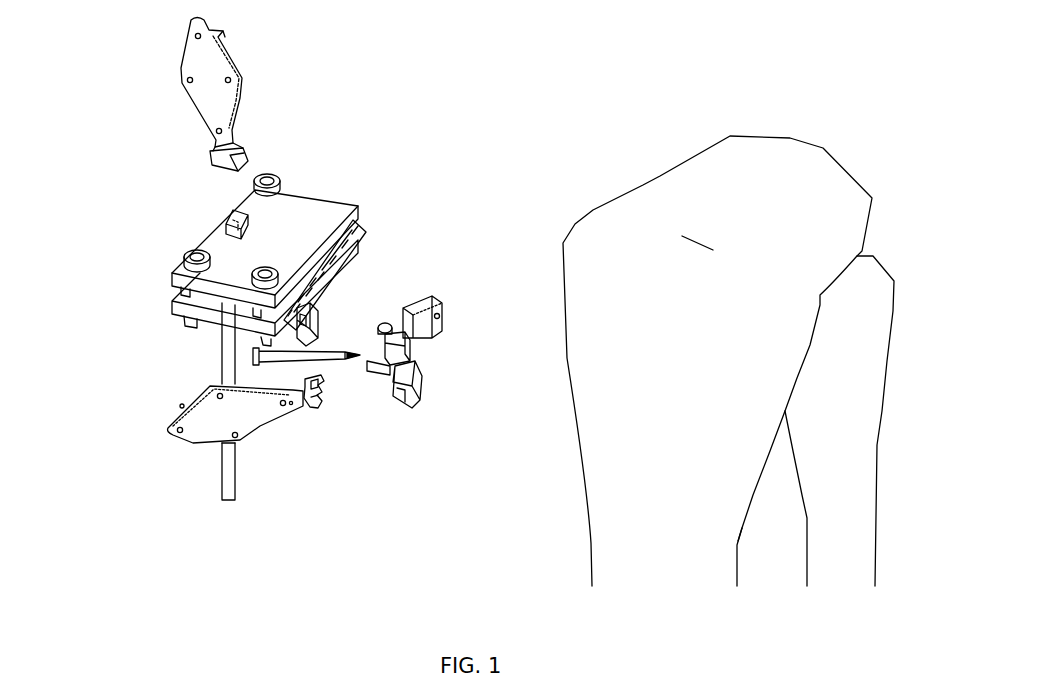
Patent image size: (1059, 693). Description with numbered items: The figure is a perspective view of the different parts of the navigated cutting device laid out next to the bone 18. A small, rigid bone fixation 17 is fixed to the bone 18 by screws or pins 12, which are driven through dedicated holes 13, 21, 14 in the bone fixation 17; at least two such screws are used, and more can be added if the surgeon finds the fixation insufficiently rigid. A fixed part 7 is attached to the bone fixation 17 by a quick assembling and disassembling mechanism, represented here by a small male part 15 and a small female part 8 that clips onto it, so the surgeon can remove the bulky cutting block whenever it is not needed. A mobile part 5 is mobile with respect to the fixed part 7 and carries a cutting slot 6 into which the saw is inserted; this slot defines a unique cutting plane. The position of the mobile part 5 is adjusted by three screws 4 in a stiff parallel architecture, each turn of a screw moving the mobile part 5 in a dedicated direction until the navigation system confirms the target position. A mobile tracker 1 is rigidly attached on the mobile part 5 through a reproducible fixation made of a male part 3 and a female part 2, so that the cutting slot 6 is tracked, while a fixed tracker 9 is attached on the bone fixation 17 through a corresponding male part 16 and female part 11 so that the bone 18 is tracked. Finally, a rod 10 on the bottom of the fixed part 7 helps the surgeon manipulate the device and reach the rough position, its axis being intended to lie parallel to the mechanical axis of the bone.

The mobile tracker 1 is at (180, 70).
The female part 2 is at (213, 165).
The male part 3 is at (227, 218).
The screws 4 is at (187, 253).
The mobile part 5 is at (315, 202).
The cutting slot 6 is at (358, 220).
The fixed part 7 is at (357, 247).
The female part 8 is at (333, 297).
The fixed tracker 9 is at (172, 425).
The rod 10 is at (220, 480).
The female part 11 is at (317, 410).
The screws or pins 12 is at (340, 360).
The dedicated hole 13 is at (440, 318).
The dedicated hole 14 is at (388, 352).
The male part 15 is at (410, 345).
The male part 16 is at (412, 360).
The bone fixation 17 is at (415, 410).
The bone 18 is at (693, 170).
The dedicated hole 21 is at (403, 410).